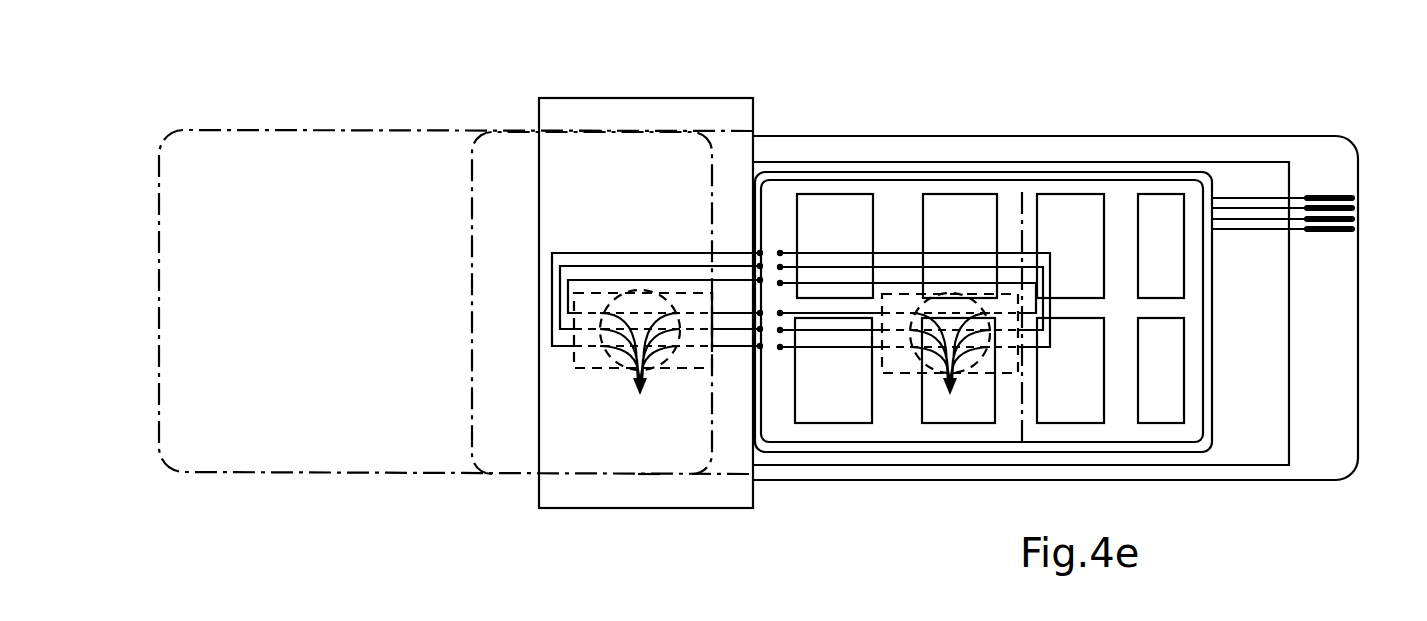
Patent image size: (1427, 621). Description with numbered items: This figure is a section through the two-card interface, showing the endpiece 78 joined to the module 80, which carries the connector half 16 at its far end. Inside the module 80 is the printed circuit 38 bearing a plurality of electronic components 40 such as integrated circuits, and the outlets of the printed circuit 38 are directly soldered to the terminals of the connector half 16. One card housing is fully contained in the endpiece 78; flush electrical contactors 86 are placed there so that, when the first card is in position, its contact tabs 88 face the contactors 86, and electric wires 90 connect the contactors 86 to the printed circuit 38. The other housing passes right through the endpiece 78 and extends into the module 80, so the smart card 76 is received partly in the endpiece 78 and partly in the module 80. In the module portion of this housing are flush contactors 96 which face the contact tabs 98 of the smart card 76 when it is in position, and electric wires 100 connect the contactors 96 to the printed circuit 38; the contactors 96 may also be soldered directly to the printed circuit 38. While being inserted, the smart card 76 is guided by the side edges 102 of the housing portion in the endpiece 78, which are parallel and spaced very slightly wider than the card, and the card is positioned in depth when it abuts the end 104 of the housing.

The connector half 16 is at (1326, 153).
The printed circuit 38 is at (1120, 202).
The electronic components 40 is at (818, 229).
The smart card 76 is at (520, 209).
The endpiece 78 is at (279, 294).
The module 80 is at (1056, 130).
The flush electrical contactors 86 is at (640, 366).
The contact tabs 88 is at (664, 358).
The electric wires 90 is at (621, 280).
The flush contactors 96 is at (950, 367).
The contact tabs 98 is at (983, 367).
The electric wires 100 is at (832, 317).
The side edges 102 is at (594, 131).
The end of the housing 104 is at (1021, 192).